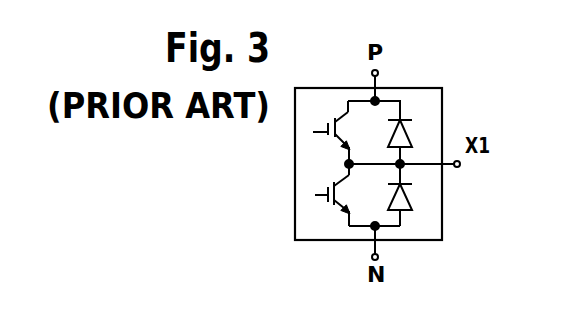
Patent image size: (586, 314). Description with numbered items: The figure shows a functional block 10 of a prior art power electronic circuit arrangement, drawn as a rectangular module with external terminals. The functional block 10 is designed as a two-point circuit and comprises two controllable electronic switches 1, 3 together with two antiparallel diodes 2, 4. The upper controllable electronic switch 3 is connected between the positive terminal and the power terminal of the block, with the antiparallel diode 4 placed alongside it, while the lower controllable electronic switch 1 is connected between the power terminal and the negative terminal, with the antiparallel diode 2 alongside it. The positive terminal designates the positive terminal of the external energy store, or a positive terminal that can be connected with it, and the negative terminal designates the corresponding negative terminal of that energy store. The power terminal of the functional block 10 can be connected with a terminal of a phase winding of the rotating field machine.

The functional block 10 is at (415, 233).
The controllable electronic switch 3 is at (329, 131).
The antiparallel diode 4 is at (411, 132).
The controllable electronic switch 1 is at (331, 198).
The antiparallel diode 2 is at (411, 195).